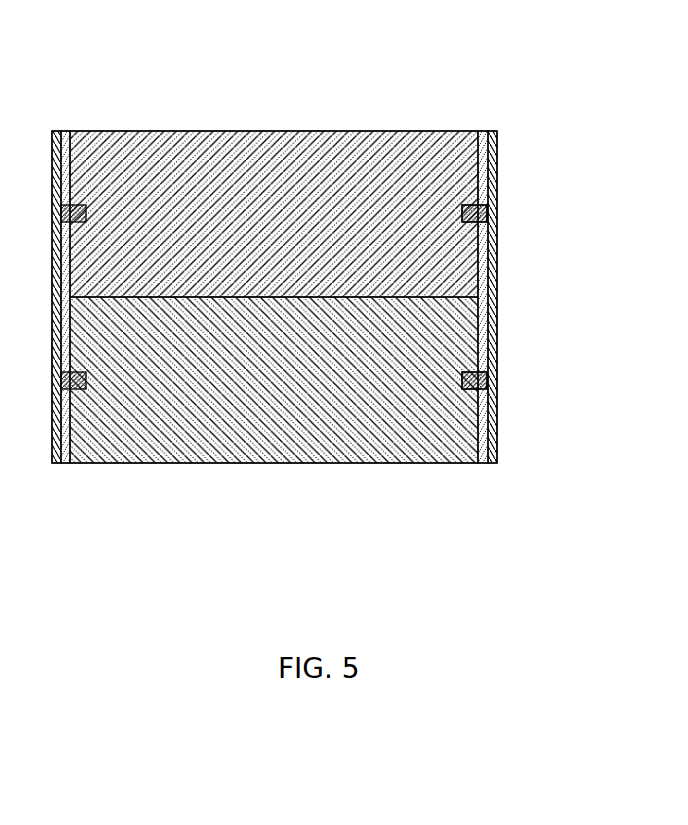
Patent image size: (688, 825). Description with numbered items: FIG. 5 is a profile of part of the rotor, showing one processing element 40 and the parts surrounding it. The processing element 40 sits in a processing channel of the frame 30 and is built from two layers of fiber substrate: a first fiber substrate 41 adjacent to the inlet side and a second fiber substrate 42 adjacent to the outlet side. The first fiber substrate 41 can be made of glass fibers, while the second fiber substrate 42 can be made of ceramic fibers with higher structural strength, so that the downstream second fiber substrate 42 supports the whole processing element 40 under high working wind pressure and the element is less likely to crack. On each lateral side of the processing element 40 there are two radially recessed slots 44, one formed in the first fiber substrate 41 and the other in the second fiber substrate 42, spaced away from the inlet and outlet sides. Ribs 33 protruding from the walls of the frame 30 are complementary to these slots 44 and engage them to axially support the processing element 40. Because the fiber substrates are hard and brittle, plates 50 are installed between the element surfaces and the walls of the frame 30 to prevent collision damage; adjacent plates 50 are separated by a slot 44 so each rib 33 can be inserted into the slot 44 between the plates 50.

The frame 30 is at (492, 281).
The rib 33 is at (486, 208).
The processing element 40 is at (274, 321).
The first fiber substrate 41 is at (389, 148).
The second fiber substrate 42 is at (447, 450).
The slot 44 is at (452, 221).
The plate 50 is at (490, 148).